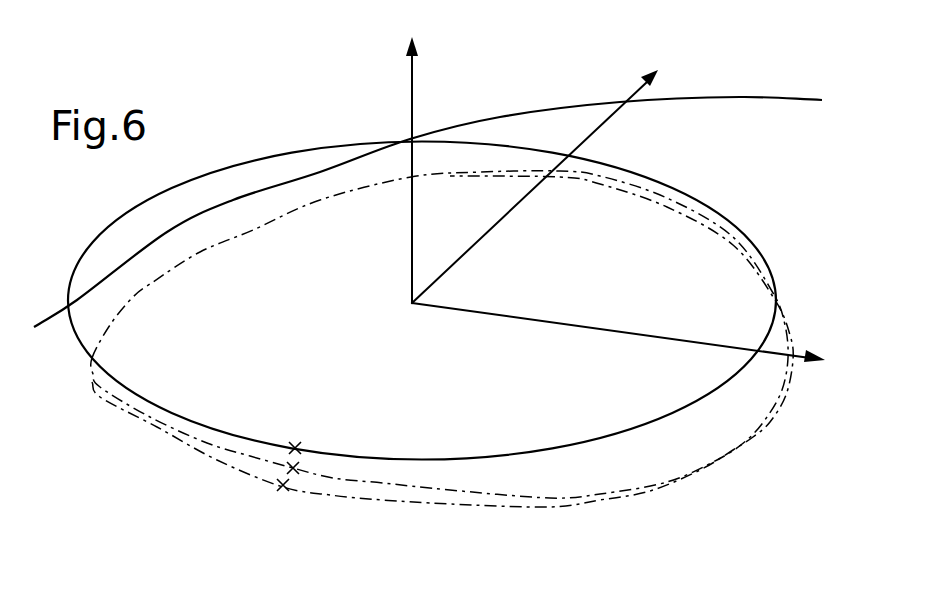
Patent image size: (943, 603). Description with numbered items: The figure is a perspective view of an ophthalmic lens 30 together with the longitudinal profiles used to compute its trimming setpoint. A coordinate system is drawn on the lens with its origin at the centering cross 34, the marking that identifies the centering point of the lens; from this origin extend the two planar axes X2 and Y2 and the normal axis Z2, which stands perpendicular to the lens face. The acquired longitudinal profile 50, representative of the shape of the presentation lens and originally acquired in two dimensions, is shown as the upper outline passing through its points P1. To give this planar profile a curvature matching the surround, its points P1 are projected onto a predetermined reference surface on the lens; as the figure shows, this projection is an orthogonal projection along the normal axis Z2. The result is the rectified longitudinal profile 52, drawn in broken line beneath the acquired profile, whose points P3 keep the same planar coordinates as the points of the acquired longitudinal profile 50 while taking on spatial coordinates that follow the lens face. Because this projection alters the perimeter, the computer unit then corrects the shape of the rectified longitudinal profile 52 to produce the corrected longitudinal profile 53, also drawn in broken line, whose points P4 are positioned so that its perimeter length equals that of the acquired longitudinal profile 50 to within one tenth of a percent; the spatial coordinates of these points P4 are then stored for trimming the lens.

The ophthalmic lens 30 is at (720, 98).
The centering cross 34 is at (412, 304).
The acquired longitudinal profile 50 is at (663, 186).
The rectified longitudinal profile 52 is at (747, 445).
The corrected longitudinal profile 53 is at (778, 392).
The points of the acquired longitudinal profile P1 is at (296, 426).
The points of the rectified longitudinal profile P3 is at (302, 470).
The points of the corrected longitudinal profile P4 is at (276, 507).
The X axis of the second coordinate system X2 is at (618, 341).
The Y axis of the second coordinate system Y2 is at (535, 186).
The normal axis Z2 is at (392, 170).